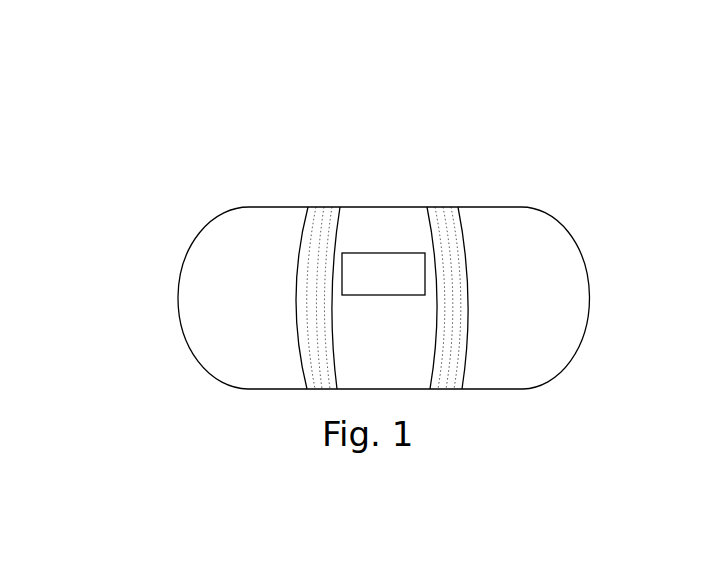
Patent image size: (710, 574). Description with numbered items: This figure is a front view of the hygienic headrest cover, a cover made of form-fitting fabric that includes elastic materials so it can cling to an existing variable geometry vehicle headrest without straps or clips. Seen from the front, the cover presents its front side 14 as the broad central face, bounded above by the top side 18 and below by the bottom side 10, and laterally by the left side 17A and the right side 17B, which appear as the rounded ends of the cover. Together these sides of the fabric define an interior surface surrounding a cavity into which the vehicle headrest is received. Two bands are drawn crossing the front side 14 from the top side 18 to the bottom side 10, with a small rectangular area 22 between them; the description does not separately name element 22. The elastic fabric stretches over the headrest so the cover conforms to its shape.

The bottom side 10 is at (258, 390).
The front side 14 is at (497, 240).
The top side 18 is at (382, 205).
The sensor window 22 is at (532, 363).
The left side 17A is at (183, 300).
The right side 17B is at (588, 307).